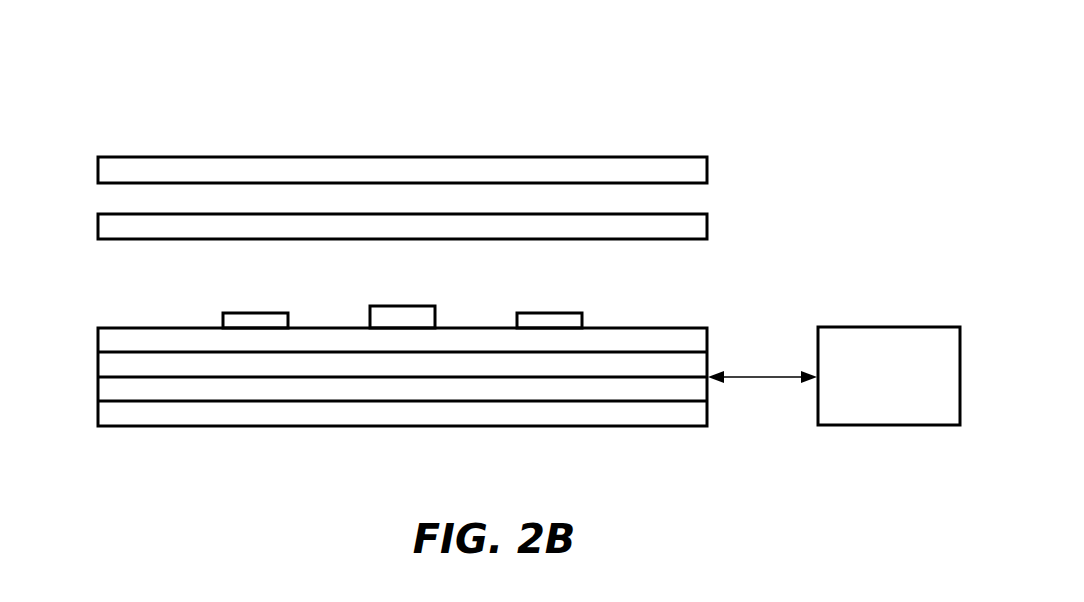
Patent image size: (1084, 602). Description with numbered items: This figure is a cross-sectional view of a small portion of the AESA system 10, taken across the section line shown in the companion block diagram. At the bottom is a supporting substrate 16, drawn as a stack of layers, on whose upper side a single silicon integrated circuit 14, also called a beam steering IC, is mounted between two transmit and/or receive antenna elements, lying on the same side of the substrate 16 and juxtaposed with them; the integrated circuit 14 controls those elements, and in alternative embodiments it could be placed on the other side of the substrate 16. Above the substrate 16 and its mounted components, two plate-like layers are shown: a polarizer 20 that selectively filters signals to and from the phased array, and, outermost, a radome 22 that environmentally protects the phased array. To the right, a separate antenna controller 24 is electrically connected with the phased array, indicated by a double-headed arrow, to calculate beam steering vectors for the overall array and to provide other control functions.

The AESA system 10 is at (350, 86).
The silicon integrated circuit 14 is at (400, 318).
The substrate 16 is at (94, 328).
The polarizer 20 is at (697, 227).
The radome 22 is at (697, 171).
The antenna controller 24 is at (834, 376).